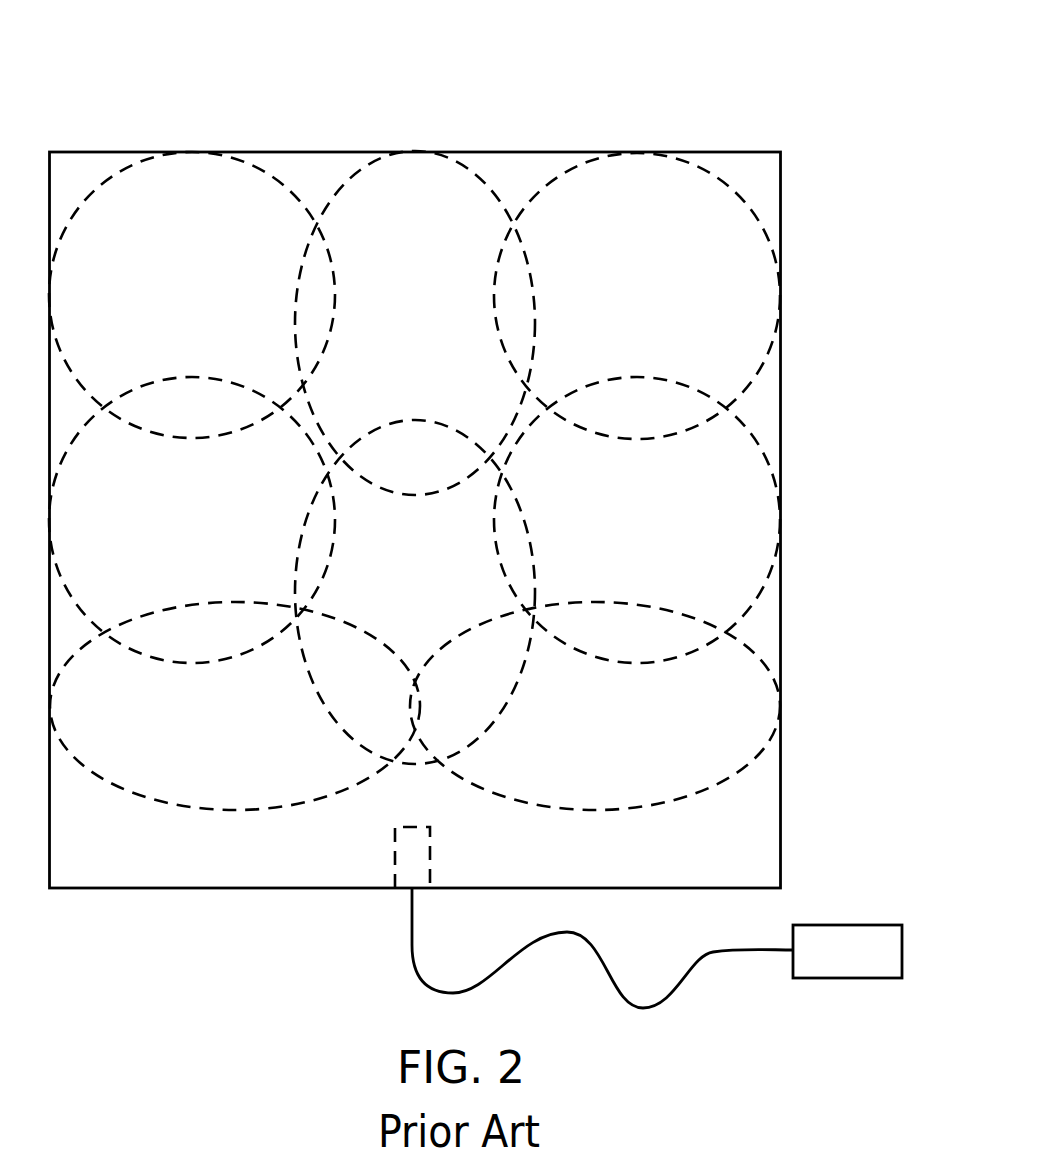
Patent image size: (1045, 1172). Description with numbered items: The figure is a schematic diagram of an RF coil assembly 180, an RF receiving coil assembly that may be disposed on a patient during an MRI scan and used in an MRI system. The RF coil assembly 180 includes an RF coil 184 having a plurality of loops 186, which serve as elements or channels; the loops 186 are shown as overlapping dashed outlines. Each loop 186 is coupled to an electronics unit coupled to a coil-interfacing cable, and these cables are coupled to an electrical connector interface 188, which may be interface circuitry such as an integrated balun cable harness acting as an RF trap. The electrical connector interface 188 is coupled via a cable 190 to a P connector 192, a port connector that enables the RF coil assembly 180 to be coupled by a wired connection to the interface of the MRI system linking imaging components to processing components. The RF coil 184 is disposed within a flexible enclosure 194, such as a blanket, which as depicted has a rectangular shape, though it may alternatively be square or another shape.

The RF coil assembly 180 is at (478, 53).
The RF coil 184 is at (345, 180).
The loops 186 is at (563, 173).
The electrical connector interface 188 is at (430, 877).
The cable 190 is at (572, 933).
The P connector 192 is at (860, 925).
The flexible enclosure 194 is at (782, 612).